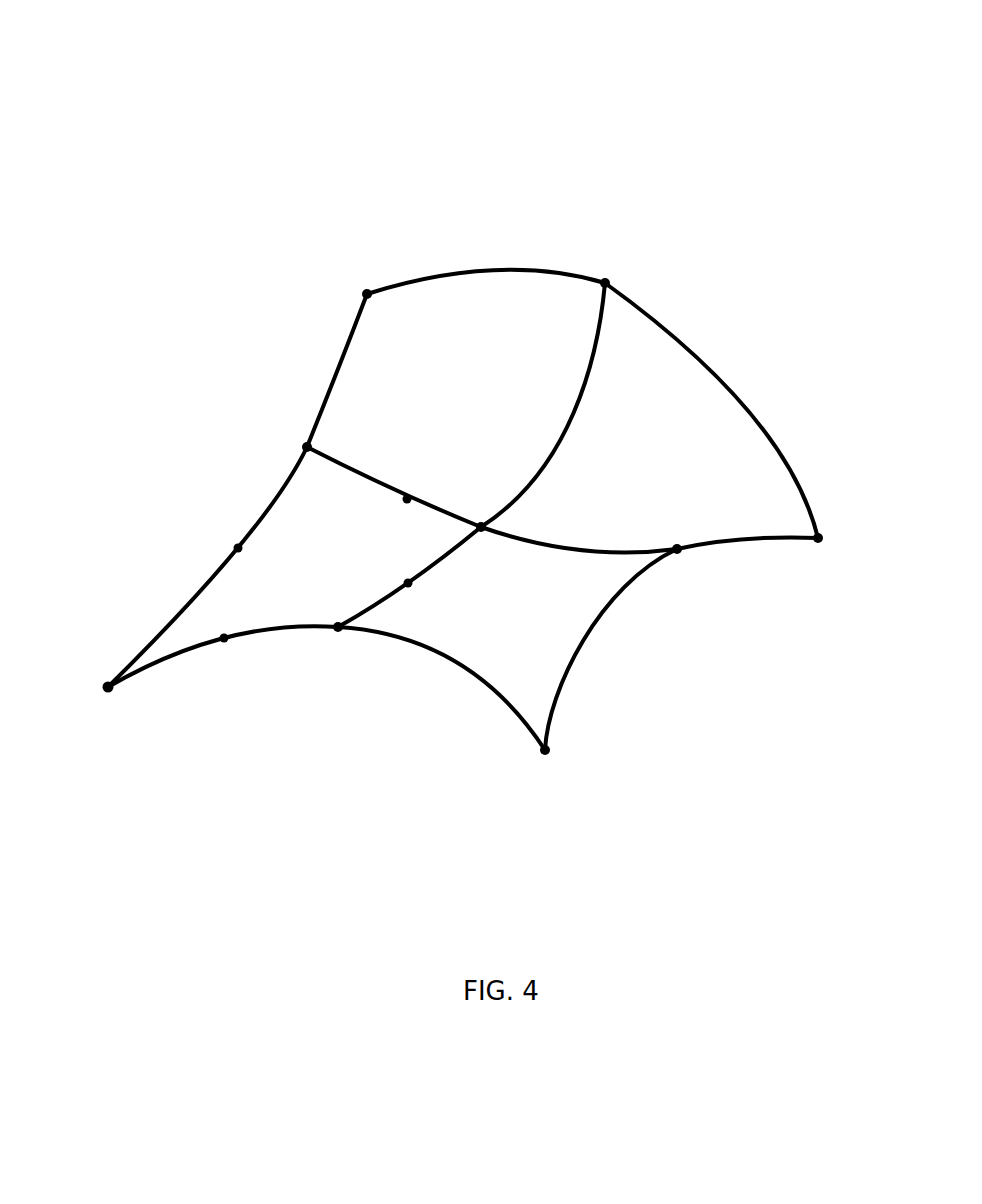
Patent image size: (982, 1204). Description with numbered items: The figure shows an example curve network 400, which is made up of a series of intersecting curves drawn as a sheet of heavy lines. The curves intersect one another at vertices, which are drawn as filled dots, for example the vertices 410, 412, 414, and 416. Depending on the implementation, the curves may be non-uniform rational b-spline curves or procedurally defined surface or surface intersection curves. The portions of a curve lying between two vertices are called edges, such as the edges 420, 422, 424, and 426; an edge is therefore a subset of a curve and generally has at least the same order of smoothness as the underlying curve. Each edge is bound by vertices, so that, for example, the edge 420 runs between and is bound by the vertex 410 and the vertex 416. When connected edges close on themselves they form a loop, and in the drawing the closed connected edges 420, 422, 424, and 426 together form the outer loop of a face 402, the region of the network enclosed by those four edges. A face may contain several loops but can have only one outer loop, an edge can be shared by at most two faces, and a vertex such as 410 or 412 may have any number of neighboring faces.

The curve network 400 is at (211, 88).
The face 402 is at (297, 537).
The vertex 410 is at (298, 443).
The vertex 412 is at (487, 542).
The vertex 414 is at (343, 649).
The vertex 416 is at (95, 687).
The edge 420 is at (222, 550).
The edge 422 is at (390, 470).
The edge 424 is at (427, 582).
The edge 426 is at (240, 647).